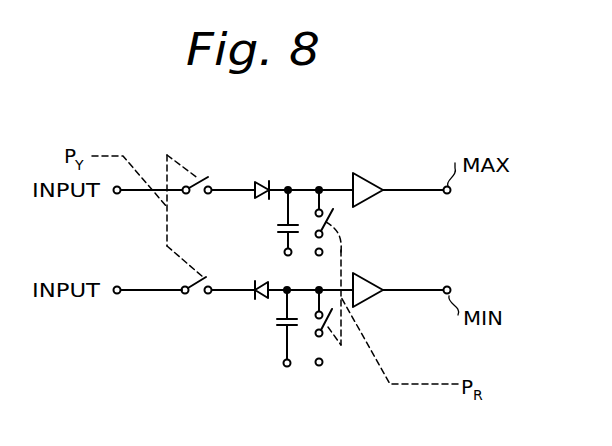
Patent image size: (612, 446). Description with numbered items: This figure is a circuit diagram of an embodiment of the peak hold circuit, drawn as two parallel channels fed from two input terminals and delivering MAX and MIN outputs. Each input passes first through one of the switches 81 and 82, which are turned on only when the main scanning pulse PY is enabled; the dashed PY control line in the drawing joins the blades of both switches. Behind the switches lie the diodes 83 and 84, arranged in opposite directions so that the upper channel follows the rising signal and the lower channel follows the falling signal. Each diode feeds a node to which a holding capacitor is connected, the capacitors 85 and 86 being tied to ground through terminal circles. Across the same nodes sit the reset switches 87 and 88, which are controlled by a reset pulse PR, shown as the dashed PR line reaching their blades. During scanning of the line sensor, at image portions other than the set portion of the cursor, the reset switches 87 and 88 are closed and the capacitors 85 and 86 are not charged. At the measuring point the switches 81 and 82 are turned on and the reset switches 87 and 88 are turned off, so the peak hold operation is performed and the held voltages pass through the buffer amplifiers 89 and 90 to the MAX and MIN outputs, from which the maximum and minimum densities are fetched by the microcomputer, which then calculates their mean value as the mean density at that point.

The switch 81 is at (199, 178).
The switch 82 is at (205, 276).
The diode 83 is at (264, 178).
The diode 84 is at (264, 284).
The capacitor 85 is at (278, 227).
The capacitor 86 is at (276, 322).
The reset switch 87 is at (323, 243).
The reset switch 88 is at (324, 340).
The buffer amplifier 89 is at (375, 172).
The buffer amplifier 90 is at (375, 276).